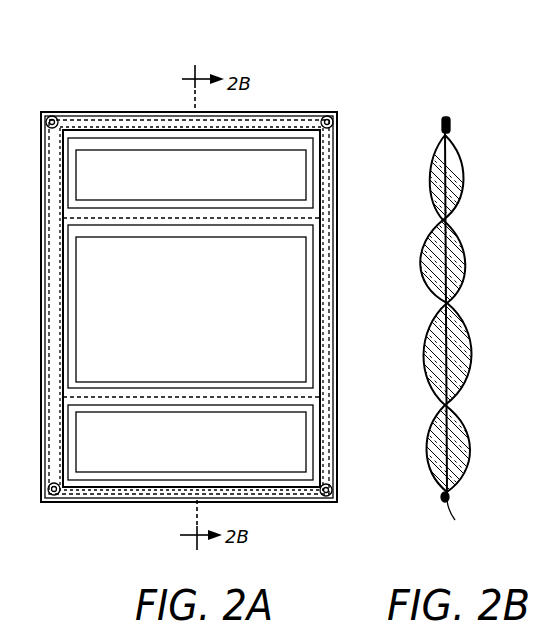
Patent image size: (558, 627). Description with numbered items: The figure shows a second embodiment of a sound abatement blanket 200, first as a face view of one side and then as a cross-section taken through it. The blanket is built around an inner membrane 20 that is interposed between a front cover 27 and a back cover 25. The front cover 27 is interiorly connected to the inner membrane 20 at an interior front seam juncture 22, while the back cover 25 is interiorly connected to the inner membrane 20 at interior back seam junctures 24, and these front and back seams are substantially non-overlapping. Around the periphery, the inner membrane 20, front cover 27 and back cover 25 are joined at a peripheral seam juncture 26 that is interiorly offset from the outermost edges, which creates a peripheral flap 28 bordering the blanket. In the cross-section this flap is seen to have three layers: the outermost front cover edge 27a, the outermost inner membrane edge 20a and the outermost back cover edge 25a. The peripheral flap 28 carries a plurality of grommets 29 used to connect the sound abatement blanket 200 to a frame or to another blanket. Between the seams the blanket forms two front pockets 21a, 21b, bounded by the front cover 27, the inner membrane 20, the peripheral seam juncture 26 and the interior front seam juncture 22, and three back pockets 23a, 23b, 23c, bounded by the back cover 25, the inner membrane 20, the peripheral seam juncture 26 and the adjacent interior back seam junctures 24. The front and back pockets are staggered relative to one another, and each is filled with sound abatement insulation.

In FIG. 2A, the sound abatement blanket 200 is at (281, 78).
In FIG. 2B, the inner membrane 20 is at (447, 350).
In FIG. 2B, the outermost inner membrane edge 20a is at (447, 502).
In FIG. 2B, the front pocket 21a is at (460, 198).
In FIG. 2B, the front pocket 21b is at (458, 398).
In FIG. 2B, the interior front seam juncture 22 is at (557, 283).
In FIG. 2A, the back pocket 23a is at (283, 198).
In FIG. 2B, the back pocket 23a is at (432, 163).
In FIG. 2A, the back pocket 23b is at (293, 322).
In FIG. 2B, the back pocket 23b is at (427, 260).
In FIG. 2A, the back pocket 23c is at (290, 455).
In FIG. 2B, the back pocket 23c is at (433, 457).
In FIG. 2A, the interior back seam juncture 24 is at (295, 220).
In FIG. 2B, the interior back seam juncture 24 is at (443, 220).
In FIG. 2B, the back cover 25 is at (423, 343).
In FIG. 2B, the outermost back cover edge 25a is at (450, 493).
In FIG. 2A, the peripheral seam juncture 26 is at (122, 136).
In FIG. 2B, the peripheral seam juncture 26 is at (445, 137).
In FIG. 2B, the front cover 27 is at (467, 243).
In FIG. 2B, the outermost front cover edge 27a is at (443, 497).
In FIG. 2A, the peripheral flap 28 is at (327, 173).
In FIG. 2B, the peripheral flap 28 is at (557, 162).
In FIG. 2A, the grommets 29 is at (333, 122).
In FIG. 2B, the grommets 29 is at (557, 88).